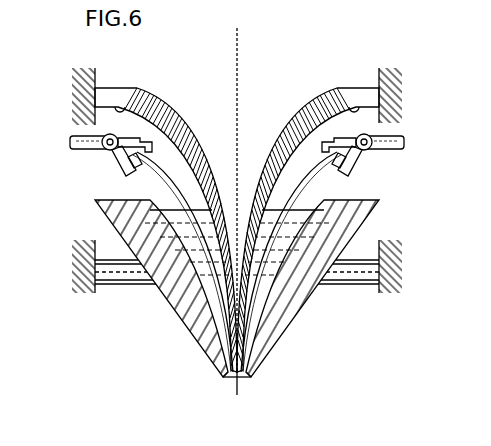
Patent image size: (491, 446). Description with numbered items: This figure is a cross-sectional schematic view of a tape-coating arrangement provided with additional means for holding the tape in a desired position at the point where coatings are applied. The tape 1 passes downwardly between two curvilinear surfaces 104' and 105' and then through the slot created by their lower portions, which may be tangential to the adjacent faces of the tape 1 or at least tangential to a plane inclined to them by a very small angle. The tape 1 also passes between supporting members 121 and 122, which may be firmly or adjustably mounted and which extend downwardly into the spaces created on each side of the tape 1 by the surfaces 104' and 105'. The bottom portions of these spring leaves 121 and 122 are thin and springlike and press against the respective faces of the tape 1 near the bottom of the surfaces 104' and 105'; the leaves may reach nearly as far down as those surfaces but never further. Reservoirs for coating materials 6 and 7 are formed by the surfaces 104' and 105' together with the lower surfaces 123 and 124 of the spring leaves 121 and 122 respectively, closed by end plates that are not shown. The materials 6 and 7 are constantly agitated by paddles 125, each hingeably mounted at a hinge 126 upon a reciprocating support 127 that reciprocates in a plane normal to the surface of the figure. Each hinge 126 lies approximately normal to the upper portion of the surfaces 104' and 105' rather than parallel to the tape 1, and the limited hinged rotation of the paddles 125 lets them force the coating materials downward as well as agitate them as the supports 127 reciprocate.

The tape 1 is at (238, 58).
The coating material 6 is at (167, 223).
The coating material 7 is at (307, 217).
The curvilinear surface 104' is at (202, 379).
The curvilinear surface 105' is at (276, 380).
The supporting member 121 is at (170, 118).
The supporting member 122 is at (310, 112).
The lower surface 123 is at (119, 105).
The lower surface 124 is at (343, 106).
The paddle 125 is at (157, 177).
The hinge 126 is at (122, 170).
The reciprocating support 127 is at (70, 142).